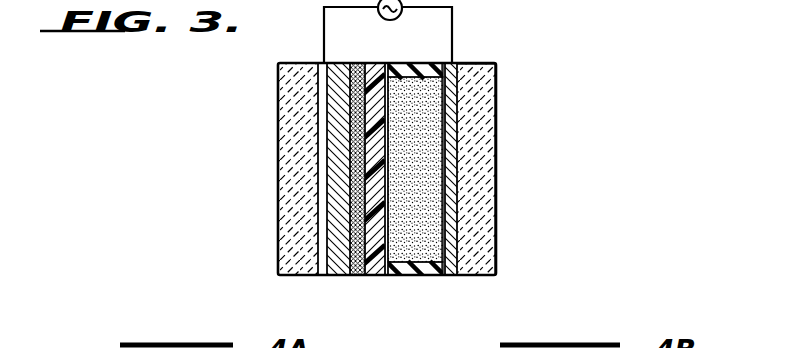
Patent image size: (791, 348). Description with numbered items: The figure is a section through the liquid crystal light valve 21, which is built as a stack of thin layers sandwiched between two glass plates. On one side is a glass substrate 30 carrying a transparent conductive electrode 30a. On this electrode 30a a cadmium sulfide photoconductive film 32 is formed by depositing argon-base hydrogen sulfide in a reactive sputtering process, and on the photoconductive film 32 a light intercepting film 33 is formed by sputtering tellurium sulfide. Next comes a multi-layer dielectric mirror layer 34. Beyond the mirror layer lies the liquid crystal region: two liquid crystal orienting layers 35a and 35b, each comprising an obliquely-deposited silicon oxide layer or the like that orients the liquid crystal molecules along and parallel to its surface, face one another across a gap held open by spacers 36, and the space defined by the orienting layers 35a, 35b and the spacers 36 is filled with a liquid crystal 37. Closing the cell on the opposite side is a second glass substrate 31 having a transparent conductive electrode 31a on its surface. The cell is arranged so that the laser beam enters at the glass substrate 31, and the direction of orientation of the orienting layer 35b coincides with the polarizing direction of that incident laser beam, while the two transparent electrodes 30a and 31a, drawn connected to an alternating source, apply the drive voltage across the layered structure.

The liquid crystal light valve 21 is at (236, 122).
The glass substrate 30 is at (312, 153).
The transparent conductive electrode 30a is at (318, 212).
The glass substrate 31 is at (480, 152).
The transparent conductive electrode 31a is at (452, 105).
The cadmium sulfide photoconductive film 32 is at (335, 276).
The light intercepting film 33 is at (353, 276).
The multi-layer dielectric mirror layer 34 is at (373, 276).
The liquid crystal orienting layer 35a is at (381, 276).
The liquid crystal orienting layer 35b is at (443, 277).
The spacers 36 is at (427, 46).
The liquid crystal 37 is at (420, 190).